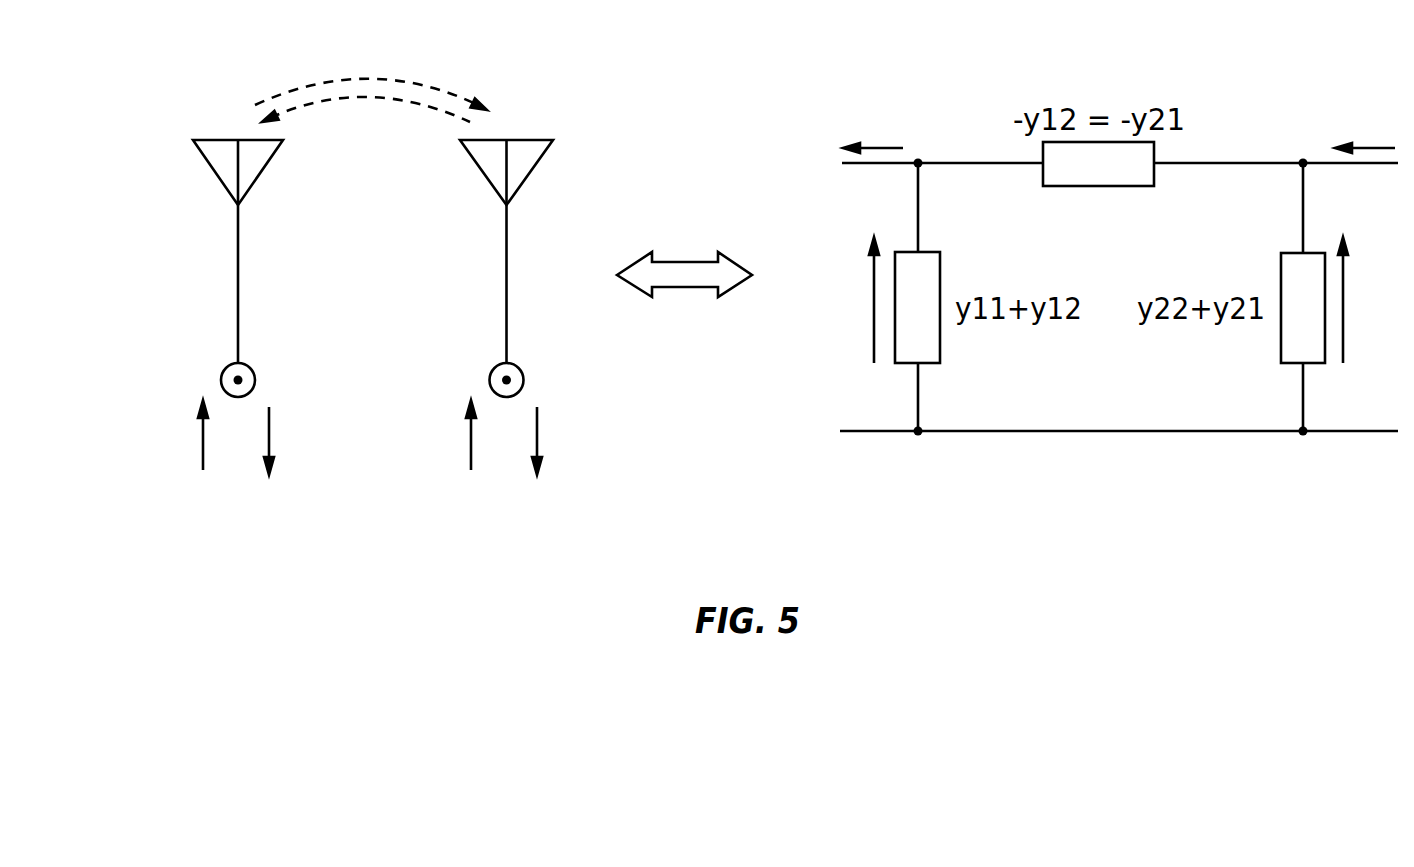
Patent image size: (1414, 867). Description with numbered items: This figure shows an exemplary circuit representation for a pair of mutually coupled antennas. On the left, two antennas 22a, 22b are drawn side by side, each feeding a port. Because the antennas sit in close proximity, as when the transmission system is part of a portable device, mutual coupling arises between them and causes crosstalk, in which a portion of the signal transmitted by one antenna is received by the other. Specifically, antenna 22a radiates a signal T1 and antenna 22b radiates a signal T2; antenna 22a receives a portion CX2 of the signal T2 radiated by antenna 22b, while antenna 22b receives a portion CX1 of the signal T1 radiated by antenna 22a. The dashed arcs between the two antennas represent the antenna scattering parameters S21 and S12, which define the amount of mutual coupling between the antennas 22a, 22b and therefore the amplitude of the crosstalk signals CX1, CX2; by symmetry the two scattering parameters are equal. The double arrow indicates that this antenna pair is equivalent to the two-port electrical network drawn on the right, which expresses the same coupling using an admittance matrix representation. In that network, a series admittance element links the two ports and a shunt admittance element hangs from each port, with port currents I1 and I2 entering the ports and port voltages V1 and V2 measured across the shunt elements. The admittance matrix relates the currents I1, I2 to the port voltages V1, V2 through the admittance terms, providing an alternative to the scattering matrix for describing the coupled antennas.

The antenna 22a is at (220, 140).
The antenna 22b is at (525, 140).
The antenna scattering parameter S21 is at (371, 74).
The antenna scattering parameter S12 is at (366, 120).
The signal radiated by antenna 22a T1 is at (196, 458).
The crosstalk signal CX2 is at (272, 462).
The signal radiated by antenna 22b T2 is at (466, 458).
The crosstalk signal CX1 is at (540, 462).
The port current I1 is at (873, 133).
The port current I2 is at (1365, 133).
The port voltage V1 is at (848, 300).
The port voltage V2 is at (1366, 300).